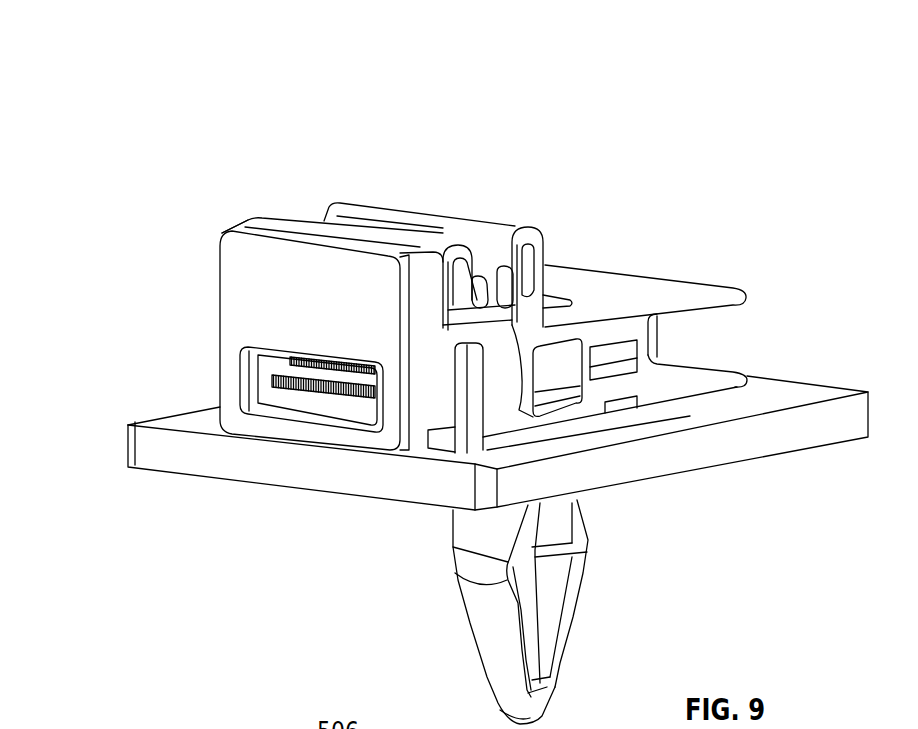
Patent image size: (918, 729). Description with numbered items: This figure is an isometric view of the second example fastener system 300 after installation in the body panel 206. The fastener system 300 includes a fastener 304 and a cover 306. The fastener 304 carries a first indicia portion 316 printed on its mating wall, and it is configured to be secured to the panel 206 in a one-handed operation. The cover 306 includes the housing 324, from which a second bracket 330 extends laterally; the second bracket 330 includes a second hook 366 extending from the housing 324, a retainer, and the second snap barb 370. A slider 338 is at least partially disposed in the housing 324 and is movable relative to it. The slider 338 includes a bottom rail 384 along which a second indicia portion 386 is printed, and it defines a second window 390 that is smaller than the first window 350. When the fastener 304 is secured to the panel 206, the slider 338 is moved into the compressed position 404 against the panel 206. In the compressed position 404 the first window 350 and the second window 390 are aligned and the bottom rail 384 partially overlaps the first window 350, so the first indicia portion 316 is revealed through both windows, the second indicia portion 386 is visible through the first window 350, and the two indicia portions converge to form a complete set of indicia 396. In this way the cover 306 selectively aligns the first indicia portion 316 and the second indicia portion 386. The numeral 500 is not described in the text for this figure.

The second example fastener system 300 is at (152, 68).
The compressed position 404 is at (439, 357).
The housing 324 is at (243, 237).
The first indicia portion 316 is at (287, 377).
The complete set of indicia 396 is at (328, 373).
The second snap barb 370 is at (475, 312).
The fastener 304 is at (660, 290).
The cover 306 is at (222, 318).
The first window 350 is at (275, 383).
The slider 338 is at (285, 398).
The bottom rail 384 is at (345, 402).
The second indicia portion 386 is at (316, 398).
The second window 390 is at (350, 402).
The second bracket 330 is at (473, 365).
The second hook 366 is at (475, 433).
The panel 206 is at (763, 446).
The pin 500 is at (76, 728).